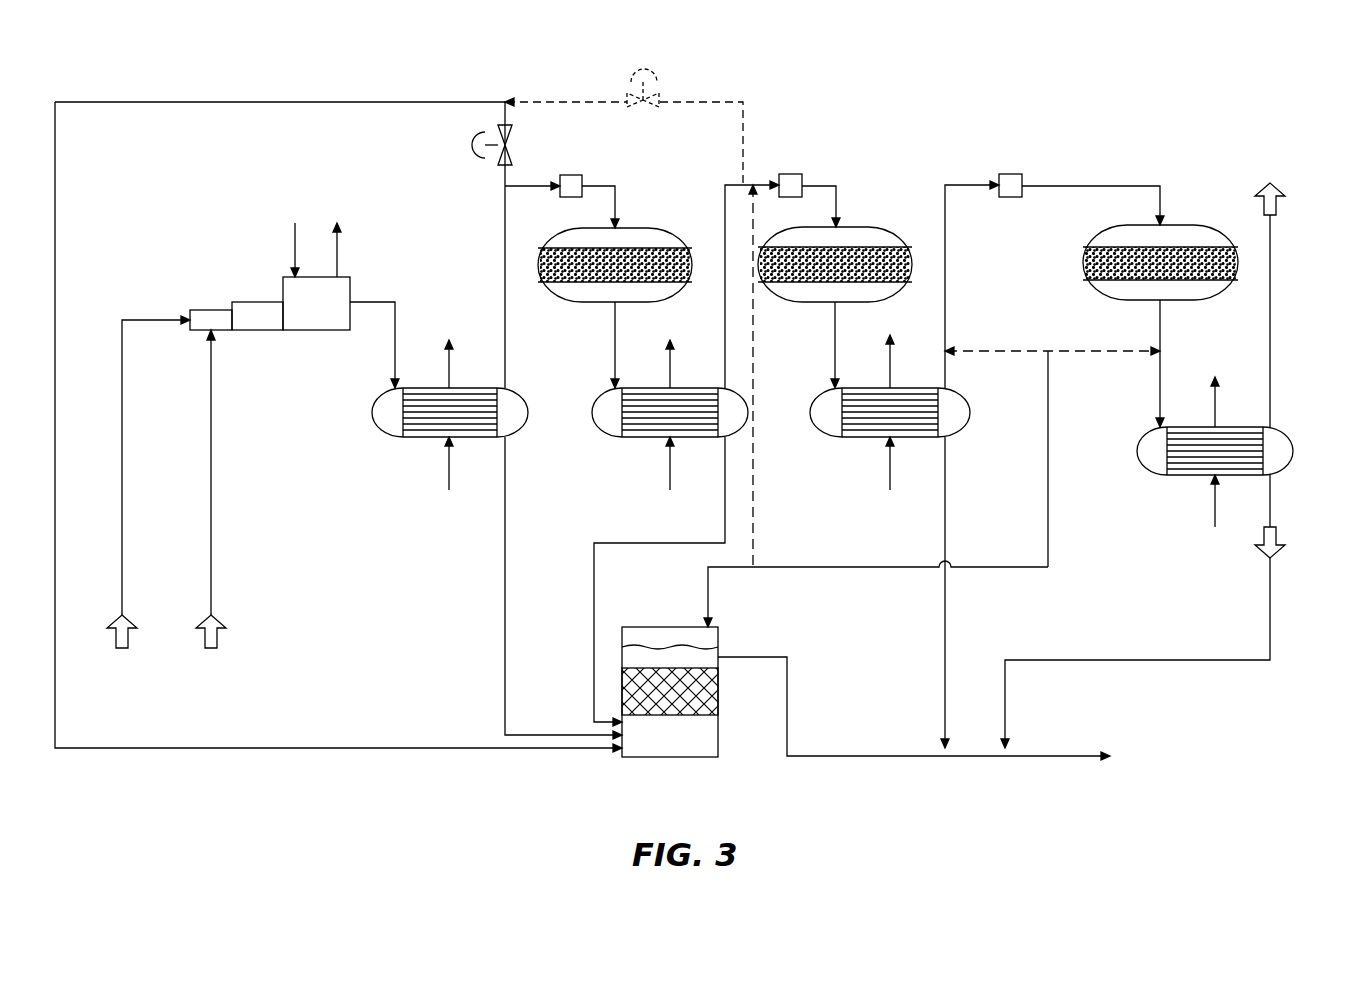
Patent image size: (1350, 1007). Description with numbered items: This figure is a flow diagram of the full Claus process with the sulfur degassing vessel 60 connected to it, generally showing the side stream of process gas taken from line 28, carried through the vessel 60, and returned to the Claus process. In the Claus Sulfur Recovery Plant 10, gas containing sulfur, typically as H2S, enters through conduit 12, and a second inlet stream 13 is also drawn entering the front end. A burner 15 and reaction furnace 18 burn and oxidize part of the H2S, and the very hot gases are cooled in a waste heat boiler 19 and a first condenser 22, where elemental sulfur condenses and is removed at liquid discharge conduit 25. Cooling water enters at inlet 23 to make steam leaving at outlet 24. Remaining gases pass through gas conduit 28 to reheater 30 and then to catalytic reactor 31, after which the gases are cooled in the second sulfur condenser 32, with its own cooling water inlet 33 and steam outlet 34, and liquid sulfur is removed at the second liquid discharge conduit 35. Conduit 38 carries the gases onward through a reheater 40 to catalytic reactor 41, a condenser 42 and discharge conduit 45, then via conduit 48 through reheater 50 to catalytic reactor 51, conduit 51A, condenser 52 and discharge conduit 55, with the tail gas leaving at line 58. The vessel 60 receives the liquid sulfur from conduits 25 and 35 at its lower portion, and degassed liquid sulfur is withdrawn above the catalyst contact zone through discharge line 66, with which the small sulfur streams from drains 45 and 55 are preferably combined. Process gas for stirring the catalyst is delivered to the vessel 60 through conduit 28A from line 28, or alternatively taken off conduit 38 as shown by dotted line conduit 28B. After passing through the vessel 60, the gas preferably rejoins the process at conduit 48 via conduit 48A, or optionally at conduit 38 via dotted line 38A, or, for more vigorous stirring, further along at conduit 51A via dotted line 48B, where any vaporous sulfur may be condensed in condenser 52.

The Claus Sulfur Recovery Plant 10 is at (1250, 143).
The conduit 12 is at (122, 410).
The solvent stream 13 is at (211, 547).
The burner 15 is at (212, 309).
The reaction furnace 18 is at (255, 332).
The waste heat boiler 19 is at (351, 290).
The first condenser 22 is at (370, 418).
The inlet 23 is at (449, 470).
The outlet 24 is at (449, 360).
The liquid discharge conduit 25 is at (505, 460).
The gas conduit 28 is at (505, 330).
The conduit 28A is at (408, 746).
The dotted line conduit 28B is at (706, 101).
The reheater 30 is at (565, 174).
The catalytic reactor 31 is at (640, 227).
The second sulfur condenser 32 is at (592, 415).
The coolant inlet 33 is at (670, 470).
The coolant outlet 34 is at (670, 360).
The second liquid discharge conduit 35 is at (725, 460).
The conduit 38 is at (727, 330).
The dotted line 38A is at (755, 525).
The pressure control valve 40 is at (790, 173).
The catalytic reactor 41 is at (860, 226).
The third heat exchanger 42 is at (838, 438).
The discharge conduit 45 is at (945, 458).
The conduit 48 is at (945, 286).
The conduit 48A is at (787, 568).
The dotted line 48B is at (1118, 350).
The pressure control valve 50 is at (1010, 173).
The catalytic reactor 51 is at (1185, 225).
The conduit 51A is at (1162, 310).
The condenser 52 is at (1137, 452).
The discharge conduit 55 is at (1270, 500).
The vapor outlet stream 58 is at (1270, 300).
The sulfur degassing vessel 60 is at (668, 758).
The degassed liquid sulfur discharge line 66 is at (787, 705).